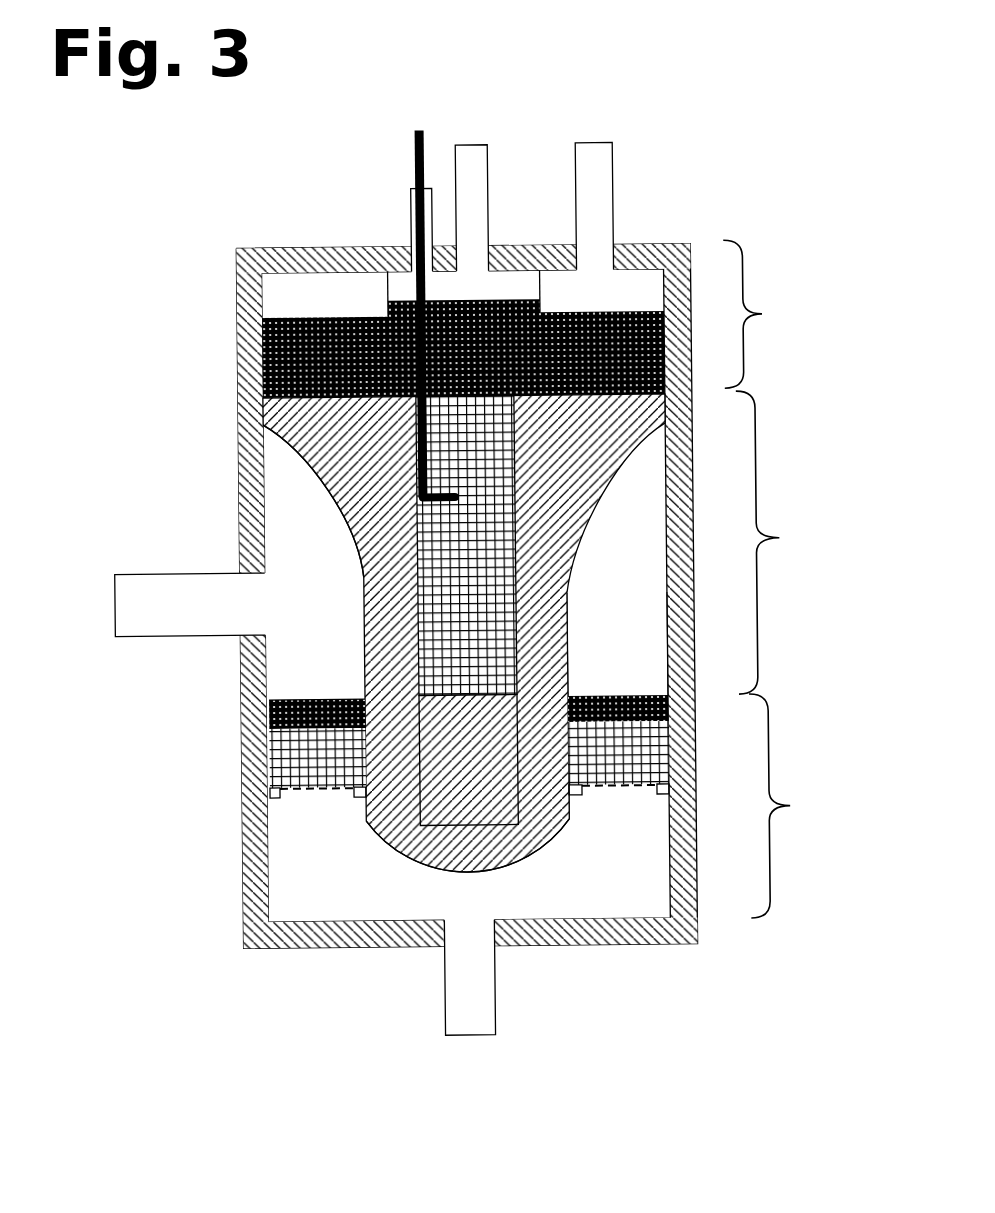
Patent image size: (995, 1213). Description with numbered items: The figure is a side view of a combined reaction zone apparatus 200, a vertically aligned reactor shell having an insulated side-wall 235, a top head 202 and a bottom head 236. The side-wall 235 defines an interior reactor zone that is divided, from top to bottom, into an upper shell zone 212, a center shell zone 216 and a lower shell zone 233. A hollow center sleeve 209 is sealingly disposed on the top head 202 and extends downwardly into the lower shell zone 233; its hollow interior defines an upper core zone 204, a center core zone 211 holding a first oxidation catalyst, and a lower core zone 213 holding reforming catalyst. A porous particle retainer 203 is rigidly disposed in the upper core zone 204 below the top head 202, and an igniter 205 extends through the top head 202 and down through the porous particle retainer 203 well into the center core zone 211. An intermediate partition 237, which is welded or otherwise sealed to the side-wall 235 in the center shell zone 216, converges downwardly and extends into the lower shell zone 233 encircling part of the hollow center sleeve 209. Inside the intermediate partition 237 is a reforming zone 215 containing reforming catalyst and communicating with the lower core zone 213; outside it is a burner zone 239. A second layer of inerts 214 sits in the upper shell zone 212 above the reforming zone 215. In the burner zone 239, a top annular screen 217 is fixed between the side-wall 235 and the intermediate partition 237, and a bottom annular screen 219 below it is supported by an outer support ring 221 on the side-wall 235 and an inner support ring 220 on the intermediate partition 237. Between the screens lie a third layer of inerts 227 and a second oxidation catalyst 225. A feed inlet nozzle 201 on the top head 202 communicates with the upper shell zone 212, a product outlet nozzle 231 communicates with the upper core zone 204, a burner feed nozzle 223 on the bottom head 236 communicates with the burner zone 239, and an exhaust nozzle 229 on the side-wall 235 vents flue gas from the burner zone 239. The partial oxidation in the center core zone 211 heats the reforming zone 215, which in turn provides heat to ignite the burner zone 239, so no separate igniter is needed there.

The combined reaction zone apparatus 200 is at (697, 243).
The feed inlet nozzle 201 is at (493, 160).
The top head 202 is at (340, 265).
The porous particle retainer 203 is at (493, 247).
The upper core zone 204 is at (543, 296).
The igniter 205 is at (419, 150).
The hollow center sleeve 209 is at (391, 277).
The center core zone 211 is at (497, 566).
The upper shell zone 212 is at (789, 313).
The lower core zone 213 is at (496, 770).
The second layer of inerts 214 is at (266, 340).
The reforming zone 215 is at (612, 449).
The center shell zone 216 is at (797, 542).
The top annular screen 217 is at (357, 694).
The bottom annular screen 219 is at (647, 786).
The inner support ring 220 is at (353, 787).
The outer support ring 221 is at (270, 794).
The burner feed nozzle 223 is at (493, 983).
The second oxidation catalyst 225 is at (291, 760).
The third layer of inerts 227 is at (267, 710).
The exhaust nozzle 229 is at (192, 569).
The product outlet nozzle 231 is at (617, 163).
The lower shell zone 233 is at (805, 805).
The side-wall 235 is at (255, 451).
The bottom head 236 is at (352, 924).
The intermediate partition 237 is at (364, 587).
The burner zone 239 is at (649, 657).